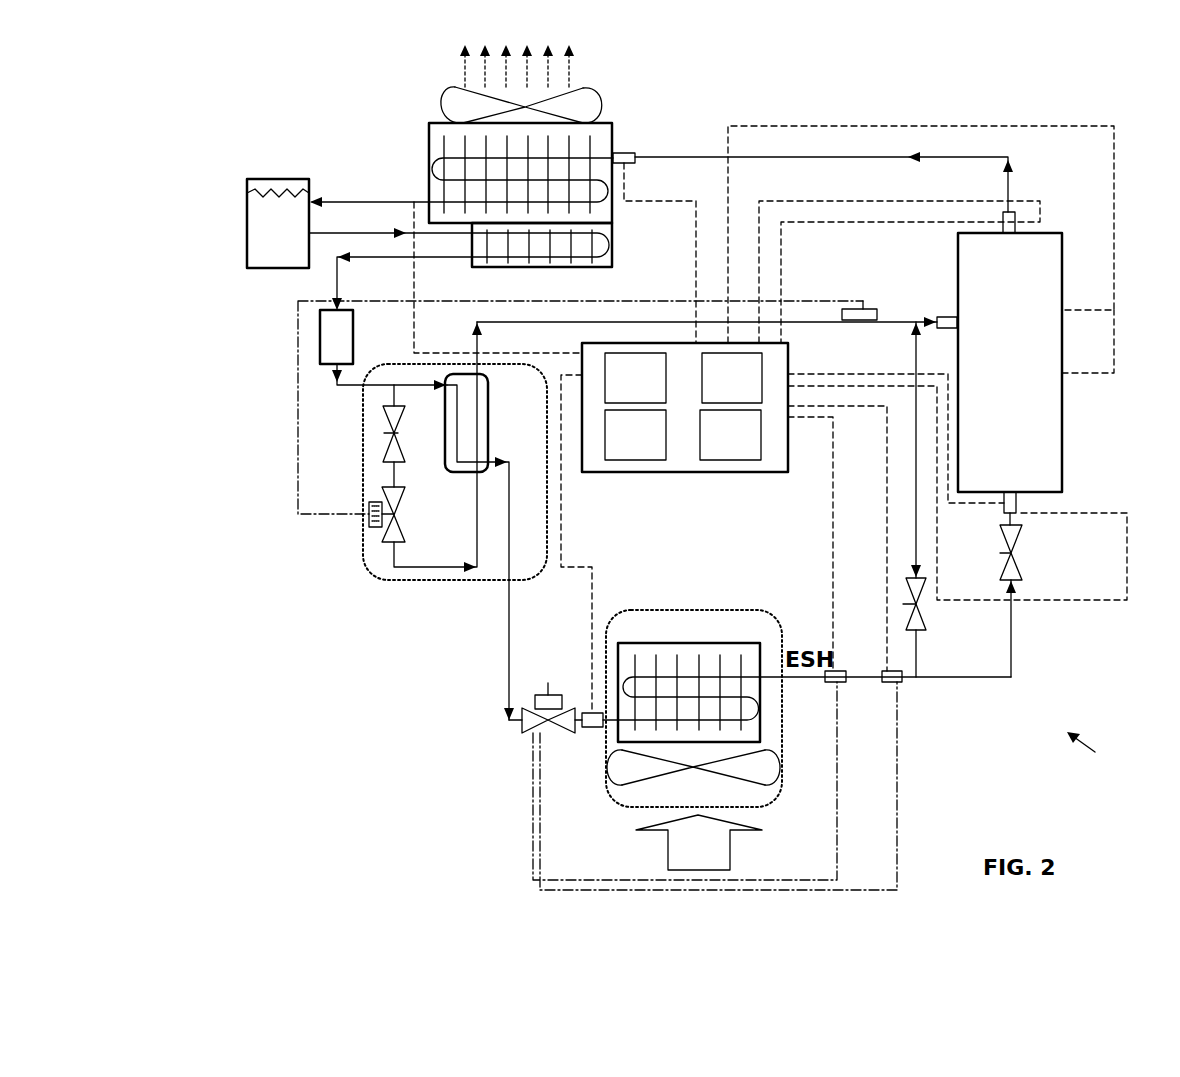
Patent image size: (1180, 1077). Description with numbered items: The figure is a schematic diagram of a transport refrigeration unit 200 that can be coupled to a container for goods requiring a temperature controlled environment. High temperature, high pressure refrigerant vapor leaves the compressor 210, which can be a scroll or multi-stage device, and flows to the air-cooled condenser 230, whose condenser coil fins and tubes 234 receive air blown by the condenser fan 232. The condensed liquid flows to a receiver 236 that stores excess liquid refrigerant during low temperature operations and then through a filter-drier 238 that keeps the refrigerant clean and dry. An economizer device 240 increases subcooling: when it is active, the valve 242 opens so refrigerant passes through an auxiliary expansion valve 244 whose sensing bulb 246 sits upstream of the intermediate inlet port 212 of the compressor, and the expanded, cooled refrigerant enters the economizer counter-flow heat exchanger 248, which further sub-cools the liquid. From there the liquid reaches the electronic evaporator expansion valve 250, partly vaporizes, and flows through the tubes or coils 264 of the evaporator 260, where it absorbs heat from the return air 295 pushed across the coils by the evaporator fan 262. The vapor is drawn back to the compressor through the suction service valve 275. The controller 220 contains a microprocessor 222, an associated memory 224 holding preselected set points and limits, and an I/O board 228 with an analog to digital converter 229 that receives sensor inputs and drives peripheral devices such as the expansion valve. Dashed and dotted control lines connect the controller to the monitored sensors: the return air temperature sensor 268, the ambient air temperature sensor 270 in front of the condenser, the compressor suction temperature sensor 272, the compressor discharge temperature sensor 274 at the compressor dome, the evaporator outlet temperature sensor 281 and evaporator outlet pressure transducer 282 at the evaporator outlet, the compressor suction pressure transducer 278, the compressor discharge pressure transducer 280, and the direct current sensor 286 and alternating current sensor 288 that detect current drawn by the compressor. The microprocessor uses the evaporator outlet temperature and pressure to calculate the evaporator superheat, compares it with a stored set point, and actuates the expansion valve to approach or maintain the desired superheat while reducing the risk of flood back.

The transport refrigeration unit 200 is at (1158, 796).
The compressor 210 is at (1010, 379).
The intermediate inlet port 212 is at (937, 317).
The controller 220 is at (685, 473).
The microprocessor 222 is at (732, 378).
The memory 224 is at (730, 435).
The input/output (I/O) board 228 is at (635, 378).
The analog to digital converter 229 is at (635, 435).
The air-cooled condenser 230 is at (608, 123).
The condenser fan 232 is at (598, 96).
The condenser coil fins and tubes 234 is at (443, 150).
The receiver 236 is at (414, 266).
The filter-drier 238 is at (318, 342).
The economizer device 240 is at (365, 560).
The valve 242 is at (417, 442).
The auxiliary expansion valve 244 is at (415, 522).
The sensing bulb 246 is at (893, 287).
The economizer counter-flow heat exchanger 248 is at (488, 425).
The electronic evaporator expansion valve (EVXV) 250 is at (522, 723).
The evaporator 260 is at (750, 643).
The evaporator fan 262 is at (733, 778).
The evaporator tubes or coils 264 is at (698, 660).
The return air temperature (RAT) sensor 268 is at (597, 727).
The ambient air temperature (AAT) sensor 270 is at (813, 247).
The compressor suction temperature (CST) sensor 272 is at (842, 374).
The compressor discharge temperature (CDT) sensor 274 is at (1040, 212).
The suction service valve (SMV) 275 is at (1022, 567).
The compressor suction pressure (CSP) transducer 278 is at (1093, 600).
The compressor discharge pressure (CDP) transducer 280 is at (850, 222).
The evaporator outlet temperature (EVOT) sensor 281 is at (898, 682).
The evaporator outlet pressure (EVOP) transducer 282 is at (840, 682).
The direct current sensor 286 is at (921, 234).
The alternating current sensor 288 is at (1088, 341).
The return air 295 is at (699, 842).